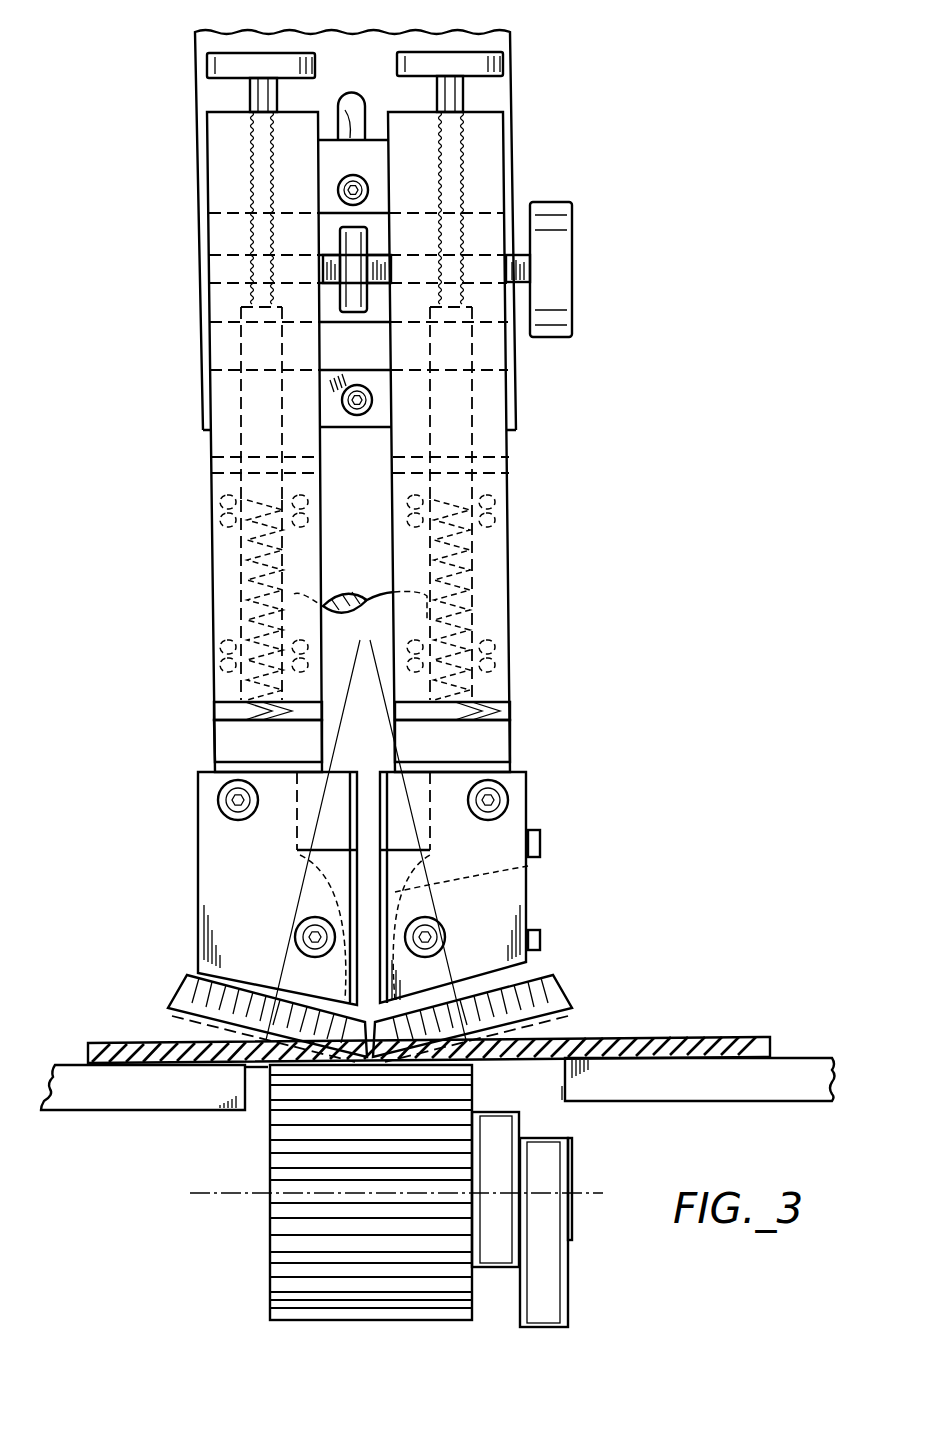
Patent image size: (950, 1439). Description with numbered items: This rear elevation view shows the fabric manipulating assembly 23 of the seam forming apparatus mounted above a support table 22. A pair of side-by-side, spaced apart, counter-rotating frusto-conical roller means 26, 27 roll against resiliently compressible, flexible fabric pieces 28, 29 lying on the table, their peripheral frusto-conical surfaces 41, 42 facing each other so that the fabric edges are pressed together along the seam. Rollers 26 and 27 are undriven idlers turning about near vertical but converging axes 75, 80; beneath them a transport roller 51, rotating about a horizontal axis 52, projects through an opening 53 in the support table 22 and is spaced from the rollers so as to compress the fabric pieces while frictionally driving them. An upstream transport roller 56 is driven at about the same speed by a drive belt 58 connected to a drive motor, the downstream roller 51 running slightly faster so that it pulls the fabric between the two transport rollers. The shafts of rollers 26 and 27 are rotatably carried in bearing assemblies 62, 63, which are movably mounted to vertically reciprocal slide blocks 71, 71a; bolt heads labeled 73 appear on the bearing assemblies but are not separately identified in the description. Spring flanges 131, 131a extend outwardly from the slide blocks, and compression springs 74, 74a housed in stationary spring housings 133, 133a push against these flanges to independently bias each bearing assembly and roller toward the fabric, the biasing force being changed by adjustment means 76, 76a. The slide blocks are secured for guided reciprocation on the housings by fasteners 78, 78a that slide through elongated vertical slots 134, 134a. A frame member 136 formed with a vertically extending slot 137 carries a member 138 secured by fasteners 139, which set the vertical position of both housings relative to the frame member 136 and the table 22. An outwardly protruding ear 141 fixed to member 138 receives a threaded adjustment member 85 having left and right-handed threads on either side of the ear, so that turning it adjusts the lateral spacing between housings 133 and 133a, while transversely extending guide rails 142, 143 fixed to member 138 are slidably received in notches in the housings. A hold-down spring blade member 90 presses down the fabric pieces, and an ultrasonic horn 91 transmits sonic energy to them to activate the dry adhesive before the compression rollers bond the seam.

The support table 22 is at (73, 1057).
The fabric manipulating assembly 23 is at (555, 893).
The roller means 26 is at (200, 956).
The roller means 27 is at (546, 975).
The fabric piece 28 is at (115, 1042).
The fabric piece 29 is at (680, 1037).
The frusto-conical surface 41 is at (180, 988).
The frusto-conical surface 42 is at (567, 982).
The transport roller 51 is at (307, 1323).
The horizontal axis 52 is at (583, 1192).
The opening 53 is at (262, 1095).
The transport roller 56 is at (493, 1112).
The drive belt 58 is at (547, 1288).
The bearing assembly 62 is at (237, 862).
The bearing assembly 63 is at (478, 848).
The slide block member 71 is at (512, 712).
The slide block member 71a is at (216, 712).
The bolt 73 is at (235, 800).
The compression spring 74 is at (512, 560).
The compression spring 74a is at (225, 645).
The axis 75 is at (250, 1017).
The adjustment means 76 is at (460, 58).
The adjustment means 76a is at (235, 62).
The fastener 78 is at (514, 524).
The fastener 78a is at (219, 526).
The axis 80 is at (470, 1035).
The threaded adjustment member 85 is at (374, 262).
The spring blade member 90 is at (541, 846).
The ultrasonic horn 91 is at (540, 868).
The spring flange 131 is at (512, 742).
The spring flange 131a is at (216, 746).
The spring housing 133 is at (492, 414).
The spring housing 133a is at (205, 135).
The elongated vertical slot 134 is at (507, 478).
The elongated vertical slot 134a is at (214, 477).
The frame member 136 is at (445, 40).
The vertically extending slot 137 is at (358, 112).
The member 138 is at (505, 126).
The fasteners 139 is at (370, 186).
The ear 141 is at (345, 306).
The guide rail 142 is at (225, 233).
The guide rail 143 is at (220, 323).